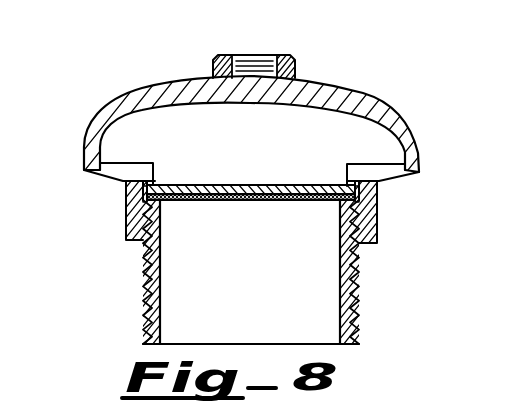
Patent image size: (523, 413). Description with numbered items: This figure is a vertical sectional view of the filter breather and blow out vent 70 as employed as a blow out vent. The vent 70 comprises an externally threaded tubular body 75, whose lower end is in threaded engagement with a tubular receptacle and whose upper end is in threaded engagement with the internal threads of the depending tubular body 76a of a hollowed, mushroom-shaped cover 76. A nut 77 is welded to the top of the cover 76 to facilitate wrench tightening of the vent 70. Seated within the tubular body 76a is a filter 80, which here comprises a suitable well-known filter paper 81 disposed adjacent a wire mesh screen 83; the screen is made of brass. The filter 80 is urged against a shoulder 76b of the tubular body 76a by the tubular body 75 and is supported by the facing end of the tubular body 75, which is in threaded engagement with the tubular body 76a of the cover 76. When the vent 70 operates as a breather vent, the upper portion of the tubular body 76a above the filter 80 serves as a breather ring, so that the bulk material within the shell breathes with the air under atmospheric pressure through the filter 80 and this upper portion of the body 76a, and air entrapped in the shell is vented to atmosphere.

The filter breather and blow out vent 70 is at (75, 116).
The externally threaded tubular body 75 is at (362, 304).
The cover 76 is at (369, 94).
The tubular body of cover 76a is at (379, 215).
The shoulder 76b is at (145, 186).
The nut 77 is at (213, 62).
The filter 80 is at (266, 208).
The filter paper 81 is at (203, 185).
The wire mesh screen 83 is at (239, 204).